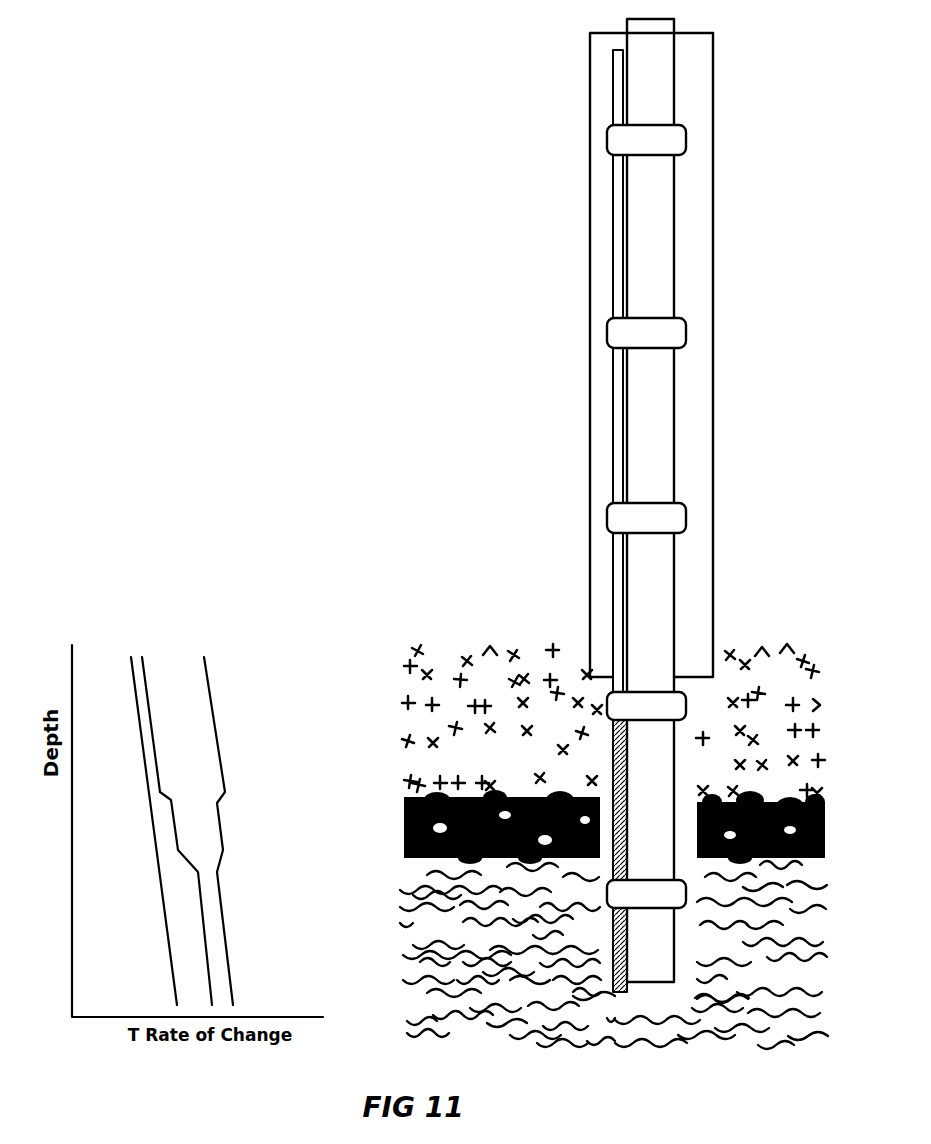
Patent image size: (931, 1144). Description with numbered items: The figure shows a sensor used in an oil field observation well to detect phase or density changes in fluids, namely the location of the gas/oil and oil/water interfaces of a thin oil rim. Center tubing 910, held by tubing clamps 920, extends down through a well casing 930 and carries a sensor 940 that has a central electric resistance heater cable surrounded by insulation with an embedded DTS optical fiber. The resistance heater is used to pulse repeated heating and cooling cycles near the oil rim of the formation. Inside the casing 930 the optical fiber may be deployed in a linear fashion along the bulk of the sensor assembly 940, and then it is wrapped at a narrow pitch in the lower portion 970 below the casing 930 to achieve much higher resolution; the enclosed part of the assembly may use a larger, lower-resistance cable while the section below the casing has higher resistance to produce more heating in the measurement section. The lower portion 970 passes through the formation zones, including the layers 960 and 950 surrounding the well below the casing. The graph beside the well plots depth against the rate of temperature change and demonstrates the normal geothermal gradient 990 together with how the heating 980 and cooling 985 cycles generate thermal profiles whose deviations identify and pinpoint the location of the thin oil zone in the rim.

The center tubing 910 is at (637, 421).
The tubing clamps 920 is at (618, 513).
The well casing 930 is at (590, 532).
The sensor 940 is at (618, 615).
The lower formation layer 950 is at (404, 915).
The gravel / reservoir layer 960 is at (404, 822).
The lower portion 970 is at (407, 712).
The heating 980 is at (220, 752).
The cooling 985 is at (178, 844).
The normal geothermal gradient 990 is at (153, 826).